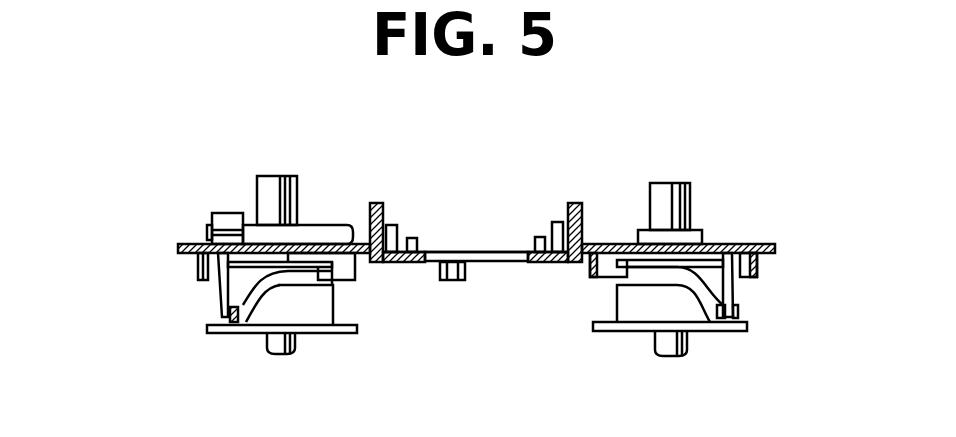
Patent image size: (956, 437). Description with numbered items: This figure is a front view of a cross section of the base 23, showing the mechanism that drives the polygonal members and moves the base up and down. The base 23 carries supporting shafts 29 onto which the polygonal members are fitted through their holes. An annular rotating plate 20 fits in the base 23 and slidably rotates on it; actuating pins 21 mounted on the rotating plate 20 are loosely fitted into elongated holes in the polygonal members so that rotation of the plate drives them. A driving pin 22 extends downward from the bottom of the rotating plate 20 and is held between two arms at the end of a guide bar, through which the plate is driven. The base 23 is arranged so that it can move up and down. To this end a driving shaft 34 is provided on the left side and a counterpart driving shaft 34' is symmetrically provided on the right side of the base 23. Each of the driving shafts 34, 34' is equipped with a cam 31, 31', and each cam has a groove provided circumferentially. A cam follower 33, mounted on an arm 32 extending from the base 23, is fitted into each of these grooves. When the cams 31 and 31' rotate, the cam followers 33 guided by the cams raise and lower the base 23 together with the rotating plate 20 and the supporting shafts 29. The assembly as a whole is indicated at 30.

The rotating plate 20 is at (510, 263).
The actuating pins 21 is at (537, 237).
The driving pin 22 is at (452, 282).
The base 23 is at (592, 243).
The supporting shafts 29 is at (557, 222).
The support assembly 30 is at (190, 272).
The cam 31 is at (282, 355).
The cam 31' is at (670, 350).
The arm 32 is at (215, 293).
The cam follower 33 is at (234, 322).
The driving shaft 34 is at (254, 190).
The driving shaft 34' is at (705, 178).